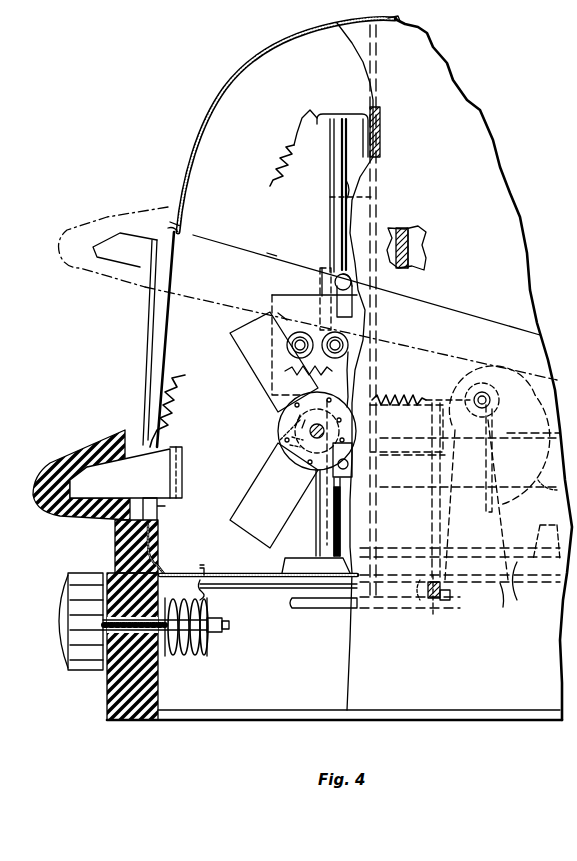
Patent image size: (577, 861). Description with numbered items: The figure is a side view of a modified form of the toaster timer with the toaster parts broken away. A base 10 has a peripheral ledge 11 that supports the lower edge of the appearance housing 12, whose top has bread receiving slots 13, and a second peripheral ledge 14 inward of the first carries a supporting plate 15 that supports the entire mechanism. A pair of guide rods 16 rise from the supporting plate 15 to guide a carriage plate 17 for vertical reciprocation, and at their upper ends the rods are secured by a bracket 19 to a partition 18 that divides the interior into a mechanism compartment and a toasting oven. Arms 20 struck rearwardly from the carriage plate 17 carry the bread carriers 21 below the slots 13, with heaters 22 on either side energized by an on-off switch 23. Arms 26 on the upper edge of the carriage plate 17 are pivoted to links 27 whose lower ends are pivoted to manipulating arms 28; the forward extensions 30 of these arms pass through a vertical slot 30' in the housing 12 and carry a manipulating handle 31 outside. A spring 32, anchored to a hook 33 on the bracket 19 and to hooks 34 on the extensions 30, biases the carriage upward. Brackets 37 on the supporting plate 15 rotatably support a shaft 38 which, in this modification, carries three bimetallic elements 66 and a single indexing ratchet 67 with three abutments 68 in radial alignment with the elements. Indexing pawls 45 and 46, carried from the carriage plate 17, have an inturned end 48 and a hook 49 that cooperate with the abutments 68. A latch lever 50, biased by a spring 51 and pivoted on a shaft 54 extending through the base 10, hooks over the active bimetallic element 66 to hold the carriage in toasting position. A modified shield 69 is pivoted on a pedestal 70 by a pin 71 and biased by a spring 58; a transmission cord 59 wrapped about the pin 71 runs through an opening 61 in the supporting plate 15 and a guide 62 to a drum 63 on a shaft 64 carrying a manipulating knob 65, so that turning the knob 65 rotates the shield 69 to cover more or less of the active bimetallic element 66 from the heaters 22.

The base 10 is at (107, 692).
The peripheral ledge 11 is at (114, 547).
The appearance housing 12 is at (206, 109).
The bread receiving slots 13 is at (404, 26).
The second peripheral ledge 14 is at (152, 556).
The supporting plate 15 is at (226, 572).
The guide rods 16 is at (330, 183).
The carriage plate 17 is at (316, 510).
The partition 18 is at (376, 200).
The bracket 19 is at (336, 114).
The arms 20 is at (318, 553).
The bread carriers 21 is at (520, 600).
The heaters 22 is at (418, 228).
The on-off switch 23 is at (356, 179).
The arms 26 is at (326, 268).
The links 27 is at (348, 305).
The manipulating arms 28 is at (546, 520).
The forward extensions 30 is at (120, 473).
The vertical slot 30' is at (308, 293).
The manipulating handle 31 is at (50, 470).
The spring 32 is at (288, 150).
The hook 33 is at (298, 114).
The hooks 34 is at (143, 455).
The brackets 37 is at (282, 560).
The shaft 38 is at (310, 431).
The indexing pawl 45 is at (270, 387).
The indexing pawl 46 is at (340, 378).
The inturned end 48 is at (279, 447).
The hook 49 is at (320, 470).
The latch lever 50 is at (432, 500).
The spring 51 is at (420, 612).
The shaft 54 is at (320, 610).
The spring 58 is at (423, 392).
The transmission cord 59 is at (487, 528).
The opening 61 is at (503, 610).
The guide 62 is at (206, 592).
The drum 63 is at (210, 650).
The shaft 64 is at (228, 628).
The manipulating knob 65 is at (60, 648).
The bimetallic elements 66 is at (235, 342).
The indexing ratchet 67 is at (279, 438).
The abutments 68 is at (280, 420).
The shield 69 is at (480, 378).
The pedestal 70 is at (512, 522).
The pin 71 is at (495, 396).